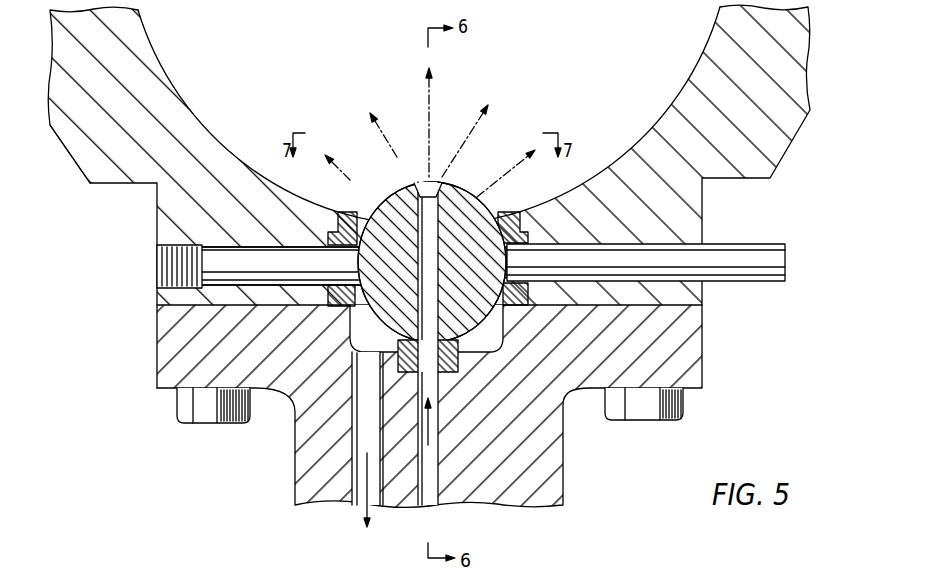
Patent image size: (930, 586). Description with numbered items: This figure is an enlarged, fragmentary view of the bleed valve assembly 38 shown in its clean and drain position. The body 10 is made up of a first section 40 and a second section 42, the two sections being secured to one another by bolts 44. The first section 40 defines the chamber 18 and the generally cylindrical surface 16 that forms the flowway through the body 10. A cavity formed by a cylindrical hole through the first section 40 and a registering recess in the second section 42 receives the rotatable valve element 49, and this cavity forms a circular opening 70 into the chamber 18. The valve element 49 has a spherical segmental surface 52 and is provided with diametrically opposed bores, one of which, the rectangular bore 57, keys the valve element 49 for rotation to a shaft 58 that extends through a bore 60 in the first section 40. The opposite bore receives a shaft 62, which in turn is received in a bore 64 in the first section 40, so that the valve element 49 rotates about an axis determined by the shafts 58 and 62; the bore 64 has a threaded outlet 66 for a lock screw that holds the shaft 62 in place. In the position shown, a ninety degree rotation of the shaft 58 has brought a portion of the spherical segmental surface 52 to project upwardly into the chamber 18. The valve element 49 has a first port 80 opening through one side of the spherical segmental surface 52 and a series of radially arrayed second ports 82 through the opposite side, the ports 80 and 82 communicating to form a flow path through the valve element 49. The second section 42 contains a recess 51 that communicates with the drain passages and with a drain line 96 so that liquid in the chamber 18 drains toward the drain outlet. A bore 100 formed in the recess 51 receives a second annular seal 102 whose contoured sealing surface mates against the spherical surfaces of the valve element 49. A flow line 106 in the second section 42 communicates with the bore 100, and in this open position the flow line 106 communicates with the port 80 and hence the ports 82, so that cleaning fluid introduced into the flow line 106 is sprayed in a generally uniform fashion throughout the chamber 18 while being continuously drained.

The body 10 is at (68, 199).
The generally cylindrical surface 16 is at (155, 52).
The chamber 18 is at (322, 38).
The bleed valve assembly 38 is at (500, 186).
The first section 40 is at (130, 162).
The second section 42 is at (296, 447).
The bolts 44 is at (188, 412).
The rotatable valve element 49 is at (378, 197).
The recess 51 is at (500, 328).
The spherical segmental surface 52 is at (390, 185).
The bore 57 is at (499, 208).
The shaft 58 is at (762, 242).
The bore 60 is at (640, 246).
The shaft 62 is at (230, 272).
The bore 64 is at (236, 248).
The threaded outlet 66 is at (165, 277).
The circular opening 70 is at (343, 208).
The first port 80 is at (500, 322).
The second ports 82 is at (415, 187).
The drain line 96 is at (357, 492).
The bore 100 is at (458, 372).
The second annular seal 102 is at (412, 373).
The flow line 106 is at (430, 478).